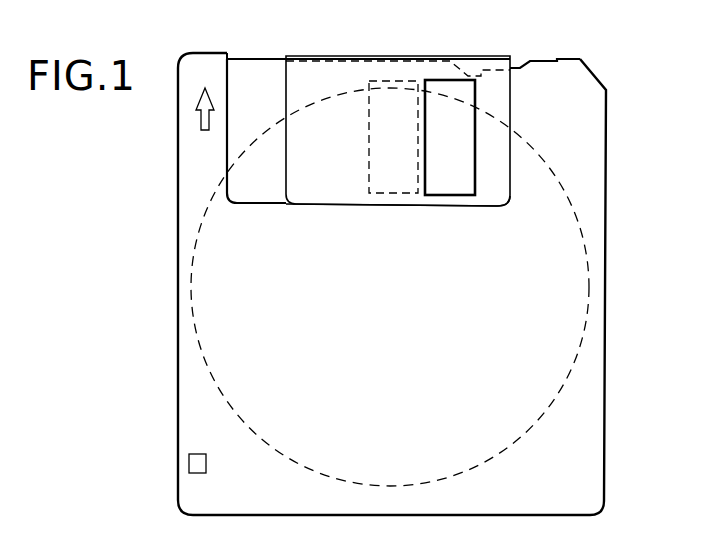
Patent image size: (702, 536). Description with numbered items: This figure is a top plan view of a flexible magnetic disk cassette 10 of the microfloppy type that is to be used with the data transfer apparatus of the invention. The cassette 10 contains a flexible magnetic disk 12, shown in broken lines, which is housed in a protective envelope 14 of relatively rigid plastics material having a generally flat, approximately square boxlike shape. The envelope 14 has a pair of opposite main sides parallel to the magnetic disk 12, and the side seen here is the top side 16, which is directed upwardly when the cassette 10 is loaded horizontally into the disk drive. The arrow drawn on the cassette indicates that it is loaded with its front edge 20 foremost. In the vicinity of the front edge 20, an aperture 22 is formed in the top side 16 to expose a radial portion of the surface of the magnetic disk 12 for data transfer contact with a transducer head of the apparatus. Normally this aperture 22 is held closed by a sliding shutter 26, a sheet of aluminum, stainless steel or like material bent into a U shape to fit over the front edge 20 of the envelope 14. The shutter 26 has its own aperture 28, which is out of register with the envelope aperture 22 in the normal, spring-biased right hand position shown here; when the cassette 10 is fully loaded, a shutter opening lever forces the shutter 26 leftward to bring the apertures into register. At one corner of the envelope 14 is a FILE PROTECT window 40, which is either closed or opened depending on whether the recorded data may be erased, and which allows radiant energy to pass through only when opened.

The disk cassette 10 is at (618, 76).
The flexible magnetic disk 12 is at (551, 407).
The protective envelope 14 is at (607, 238).
The top side 16 is at (188, 398).
The front edge 20 is at (543, 61).
The aperture 22 is at (372, 98).
The sliding shutter 26 is at (313, 67).
The shutter aperture 28 is at (472, 186).
The FILE PROTECT window 40 is at (204, 466).